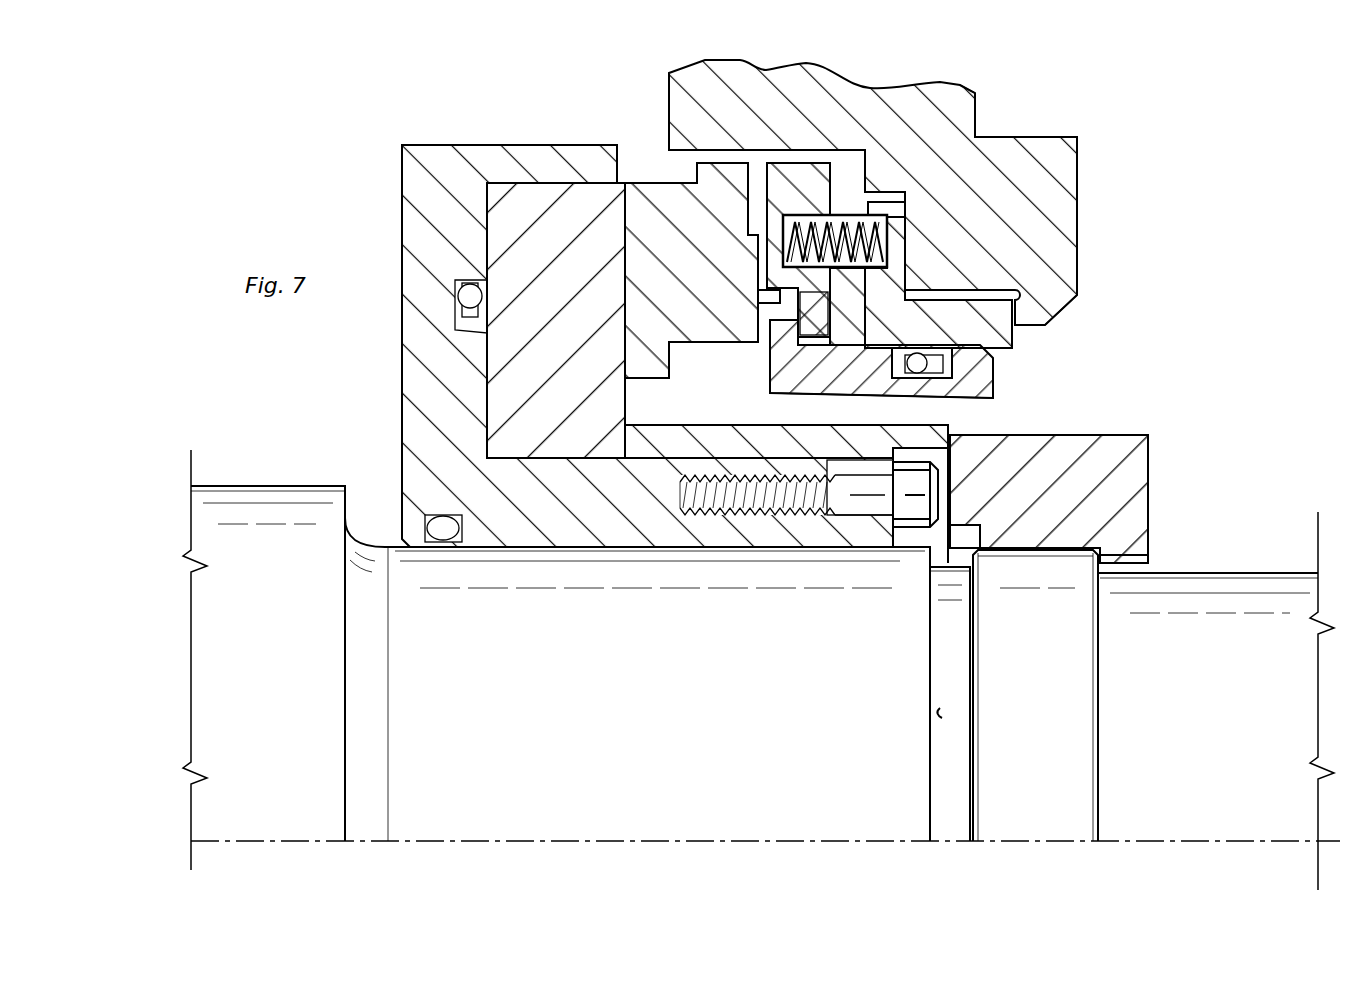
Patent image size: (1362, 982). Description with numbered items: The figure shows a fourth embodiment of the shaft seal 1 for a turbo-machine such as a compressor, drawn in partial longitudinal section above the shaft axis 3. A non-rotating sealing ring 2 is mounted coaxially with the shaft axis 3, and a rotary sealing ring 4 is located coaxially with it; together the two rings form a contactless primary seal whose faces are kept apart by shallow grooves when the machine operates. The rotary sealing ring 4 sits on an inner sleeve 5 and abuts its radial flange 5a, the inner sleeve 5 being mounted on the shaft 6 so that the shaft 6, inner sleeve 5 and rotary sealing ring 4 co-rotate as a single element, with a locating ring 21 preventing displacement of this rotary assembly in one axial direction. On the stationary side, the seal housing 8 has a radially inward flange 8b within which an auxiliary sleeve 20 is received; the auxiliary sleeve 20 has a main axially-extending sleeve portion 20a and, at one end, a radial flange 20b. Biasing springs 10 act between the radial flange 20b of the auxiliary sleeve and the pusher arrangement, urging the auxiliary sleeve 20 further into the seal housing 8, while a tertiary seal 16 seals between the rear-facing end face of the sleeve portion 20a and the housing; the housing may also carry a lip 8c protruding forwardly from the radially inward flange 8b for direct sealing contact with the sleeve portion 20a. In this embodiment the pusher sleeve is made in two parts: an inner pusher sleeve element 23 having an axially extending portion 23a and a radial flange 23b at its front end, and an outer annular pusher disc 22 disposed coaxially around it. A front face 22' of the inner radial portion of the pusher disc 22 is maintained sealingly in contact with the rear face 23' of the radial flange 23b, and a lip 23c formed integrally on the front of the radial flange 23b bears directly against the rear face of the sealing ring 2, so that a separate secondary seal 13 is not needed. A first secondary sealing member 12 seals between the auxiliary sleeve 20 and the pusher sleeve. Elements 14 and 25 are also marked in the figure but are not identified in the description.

The shaft seal 1 is at (1222, 334).
The sealing ring 2 is at (660, 183).
The shaft axis 3 is at (645, 841).
The rotary sealing ring 4 is at (565, 210).
The inner sleeve 5 is at (402, 215).
The radial flange 5a is at (415, 378).
The shaft 6 is at (268, 486).
The seal housing 8 is at (669, 112).
The radially inward flange 8b is at (1067, 215).
The lip 8c is at (1045, 318).
The biasing spring 10 is at (830, 237).
The first secondary sealing member 12 is at (920, 357).
The secondary seal 13 is at (757, 292).
The sleeve 14 is at (965, 408).
The tertiary seal 16 is at (1025, 350).
The auxiliary sleeve 20 is at (935, 300).
The axially-extending sleeve portion 20a is at (1000, 305).
The radial flange 20b is at (893, 215).
The locating ring 21 is at (1150, 512).
The outer annular pusher disc 22 is at (798, 212).
The front face 22' is at (871, 306).
The inner pusher sleeve element 23 is at (915, 346).
The rear face 23' is at (881, 371).
The axially extending portion 23a is at (853, 397).
The radial flange 23b is at (775, 352).
The lip 23c is at (757, 318).
The stop element 25 is at (905, 210).